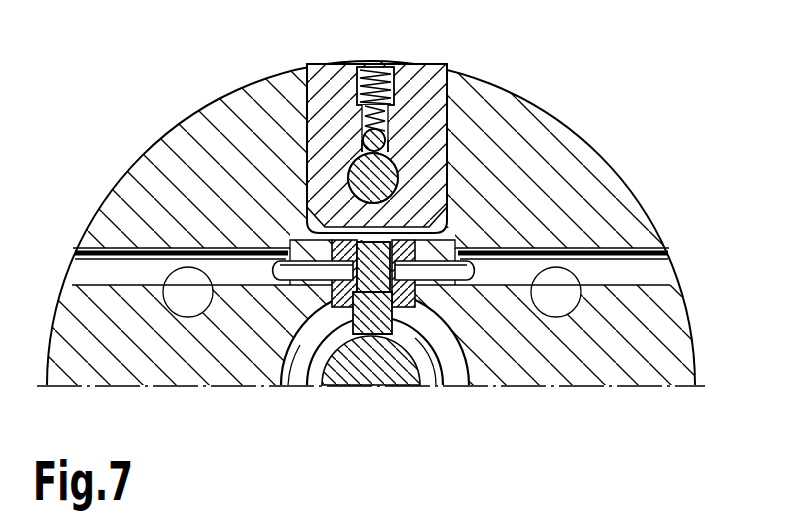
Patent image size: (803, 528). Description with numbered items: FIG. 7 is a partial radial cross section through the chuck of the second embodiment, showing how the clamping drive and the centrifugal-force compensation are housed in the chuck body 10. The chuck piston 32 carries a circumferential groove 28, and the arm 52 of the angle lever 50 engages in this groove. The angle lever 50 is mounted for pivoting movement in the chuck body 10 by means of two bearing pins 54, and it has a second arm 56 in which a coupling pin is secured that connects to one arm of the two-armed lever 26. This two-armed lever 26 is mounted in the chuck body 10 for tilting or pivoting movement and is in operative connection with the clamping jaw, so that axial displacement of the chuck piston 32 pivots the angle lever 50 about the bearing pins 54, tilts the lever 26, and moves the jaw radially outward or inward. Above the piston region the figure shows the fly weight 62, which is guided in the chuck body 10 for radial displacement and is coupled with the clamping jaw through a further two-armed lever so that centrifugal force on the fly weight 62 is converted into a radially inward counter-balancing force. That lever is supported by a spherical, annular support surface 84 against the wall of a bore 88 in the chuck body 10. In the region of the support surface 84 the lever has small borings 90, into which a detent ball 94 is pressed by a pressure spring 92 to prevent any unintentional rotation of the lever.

The chuck body 10 is at (616, 160).
The two-armed lever 26 is at (352, 251).
The circumferential groove 28 is at (336, 338).
The chuck piston 32 is at (370, 368).
The angle lever 50 is at (424, 250).
The arm of the angle lever 52 is at (377, 318).
The bearing pins 54 is at (323, 282).
The second arm of the angle lever 56 is at (340, 307).
The fly weight 62 is at (337, 87).
The spherical annular support surface 84 is at (398, 182).
The bore in the chuck body 88 is at (443, 170).
The small borings 90 is at (355, 156).
The pressure spring 92 is at (357, 118).
The detent ball 94 is at (385, 137).